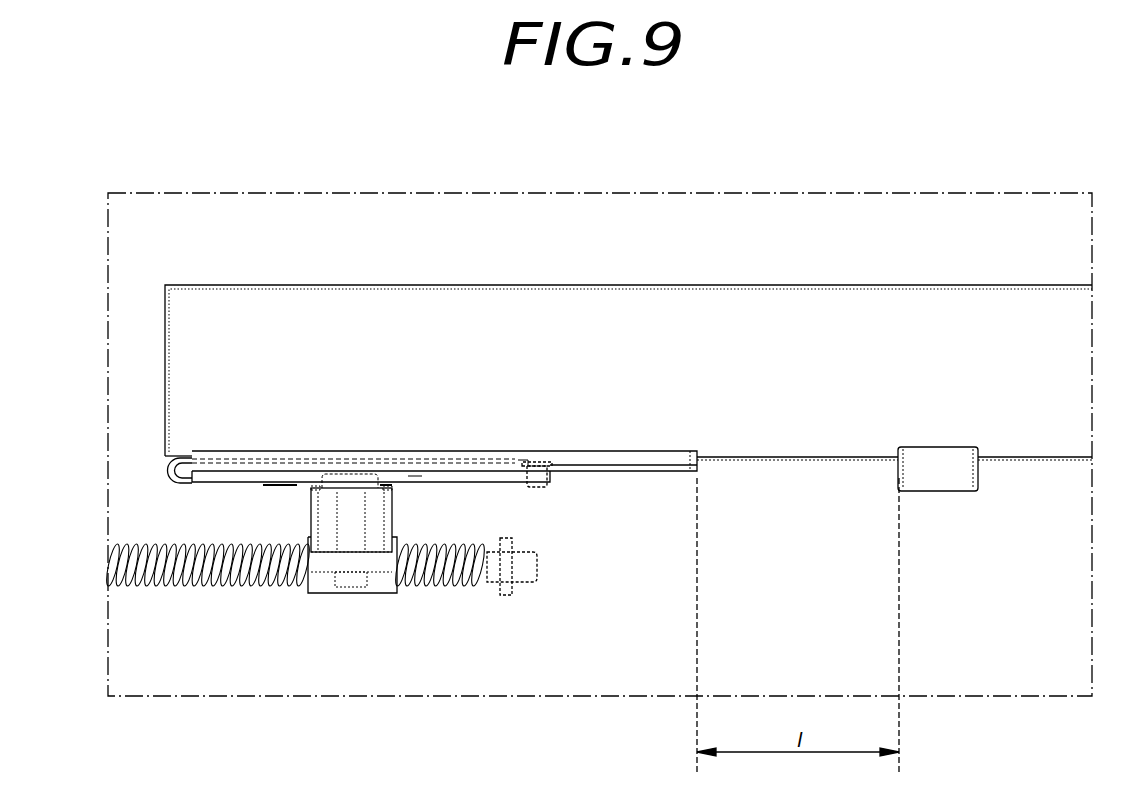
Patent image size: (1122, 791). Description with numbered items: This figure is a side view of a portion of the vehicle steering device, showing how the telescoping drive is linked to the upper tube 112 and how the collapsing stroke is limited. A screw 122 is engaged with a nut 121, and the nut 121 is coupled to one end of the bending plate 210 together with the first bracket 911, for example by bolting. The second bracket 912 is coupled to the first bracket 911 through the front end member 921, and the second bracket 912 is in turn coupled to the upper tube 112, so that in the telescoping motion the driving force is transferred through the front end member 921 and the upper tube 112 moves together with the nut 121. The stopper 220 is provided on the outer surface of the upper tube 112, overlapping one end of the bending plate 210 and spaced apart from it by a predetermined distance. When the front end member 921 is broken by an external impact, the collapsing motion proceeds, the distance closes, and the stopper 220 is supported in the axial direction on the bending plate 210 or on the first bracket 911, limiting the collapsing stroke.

The upper tube 112 is at (946, 303).
The second bracket 912 is at (628, 455).
The first bracket 911 is at (463, 477).
The front end member 921 is at (542, 478).
The bending plate 210 is at (172, 470).
The stopper 220 is at (946, 470).
The nut 121 is at (322, 590).
The screw 122 is at (165, 567).